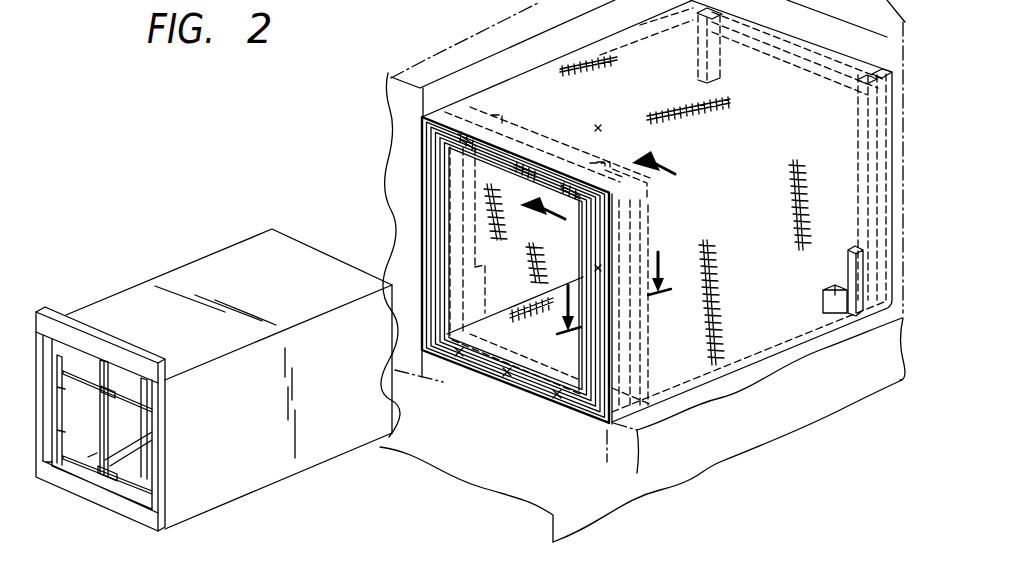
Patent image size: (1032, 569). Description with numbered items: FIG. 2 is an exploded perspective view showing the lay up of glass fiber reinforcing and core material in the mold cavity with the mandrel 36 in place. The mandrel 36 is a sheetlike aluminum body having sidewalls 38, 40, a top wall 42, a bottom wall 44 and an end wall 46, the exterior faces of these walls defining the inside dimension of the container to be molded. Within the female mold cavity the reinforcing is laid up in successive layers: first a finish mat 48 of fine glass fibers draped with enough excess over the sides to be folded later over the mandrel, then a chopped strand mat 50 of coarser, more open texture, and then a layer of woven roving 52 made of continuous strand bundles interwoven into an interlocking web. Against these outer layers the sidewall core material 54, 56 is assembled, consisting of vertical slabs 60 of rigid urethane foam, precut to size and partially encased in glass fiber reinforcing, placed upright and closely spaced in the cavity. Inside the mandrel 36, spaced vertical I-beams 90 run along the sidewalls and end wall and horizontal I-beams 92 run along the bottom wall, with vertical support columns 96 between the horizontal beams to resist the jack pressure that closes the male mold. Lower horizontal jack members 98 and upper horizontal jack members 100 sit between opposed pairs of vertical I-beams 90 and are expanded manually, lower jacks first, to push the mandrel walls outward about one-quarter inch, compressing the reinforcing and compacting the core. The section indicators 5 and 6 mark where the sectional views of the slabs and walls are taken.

The mandrel 36 is at (211, 379).
The sidewall 38 is at (98, 414).
The sidewall 40 is at (258, 482).
The top wall 42 is at (236, 247).
The bottom wall 44 is at (132, 520).
The end wall 46 is at (311, 247).
The finish mat 48 is at (555, 410).
The chopped strand mat 50 is at (515, 386).
The woven roving 52 is at (483, 365).
The sidewall core material 54 is at (432, 162).
The sidewall core material 56 is at (600, 332).
The vertical slab 60 is at (638, 353).
The vertical I-beam 90 is at (50, 467).
The horizontal I-beam 92 is at (123, 447).
The vertical support column 96 is at (104, 428).
The lower horizontal jack member 98 is at (96, 477).
The upper horizontal jack member 100 is at (83, 378).
The section line 5- 5 is at (606, 194).
The section line 6- 6 is at (614, 281).